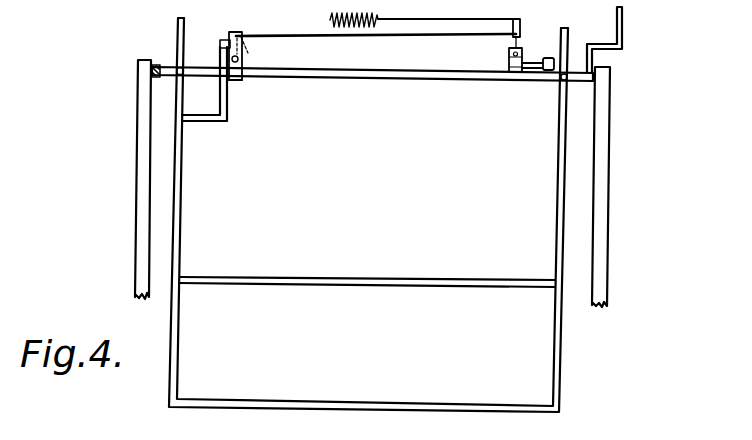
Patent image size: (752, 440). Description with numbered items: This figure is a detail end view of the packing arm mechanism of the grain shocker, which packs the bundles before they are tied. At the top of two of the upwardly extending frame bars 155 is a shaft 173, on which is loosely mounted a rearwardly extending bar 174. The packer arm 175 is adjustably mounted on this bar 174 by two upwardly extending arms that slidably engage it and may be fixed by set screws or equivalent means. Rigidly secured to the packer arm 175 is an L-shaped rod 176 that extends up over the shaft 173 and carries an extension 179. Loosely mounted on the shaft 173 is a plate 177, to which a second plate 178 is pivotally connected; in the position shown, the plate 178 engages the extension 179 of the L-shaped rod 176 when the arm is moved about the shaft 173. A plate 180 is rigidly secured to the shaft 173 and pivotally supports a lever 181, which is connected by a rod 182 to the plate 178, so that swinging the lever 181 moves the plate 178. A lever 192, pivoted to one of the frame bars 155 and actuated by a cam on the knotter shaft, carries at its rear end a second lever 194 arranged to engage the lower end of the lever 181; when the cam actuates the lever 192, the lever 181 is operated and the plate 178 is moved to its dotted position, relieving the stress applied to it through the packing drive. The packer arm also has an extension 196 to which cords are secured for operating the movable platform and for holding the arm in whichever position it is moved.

The frame bars 155 is at (143, 180).
The shaft 173 is at (153, 65).
The bar 174 is at (412, 76).
The packer arm 175 is at (292, 283).
The L-shaped rod 176 is at (210, 120).
The plate 177 is at (240, 62).
The plate 178 is at (238, 32).
The extension 179 is at (228, 45).
The plate 180 is at (508, 60).
The lever 181 is at (521, 36).
The rod 182 is at (434, 37).
The lever 192 is at (549, 58).
The second lever 194 is at (533, 72).
The extension 196 is at (623, 35).